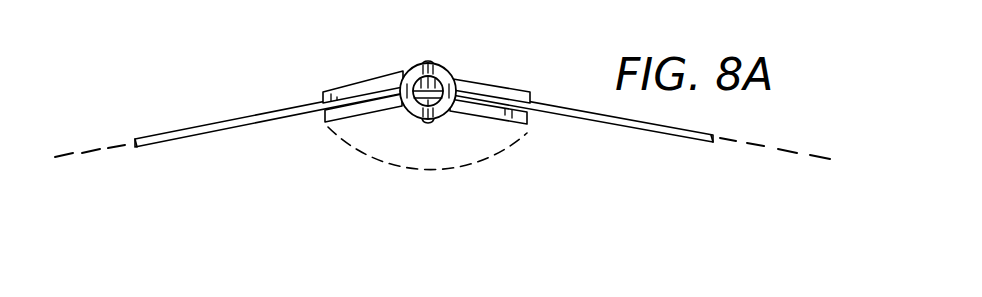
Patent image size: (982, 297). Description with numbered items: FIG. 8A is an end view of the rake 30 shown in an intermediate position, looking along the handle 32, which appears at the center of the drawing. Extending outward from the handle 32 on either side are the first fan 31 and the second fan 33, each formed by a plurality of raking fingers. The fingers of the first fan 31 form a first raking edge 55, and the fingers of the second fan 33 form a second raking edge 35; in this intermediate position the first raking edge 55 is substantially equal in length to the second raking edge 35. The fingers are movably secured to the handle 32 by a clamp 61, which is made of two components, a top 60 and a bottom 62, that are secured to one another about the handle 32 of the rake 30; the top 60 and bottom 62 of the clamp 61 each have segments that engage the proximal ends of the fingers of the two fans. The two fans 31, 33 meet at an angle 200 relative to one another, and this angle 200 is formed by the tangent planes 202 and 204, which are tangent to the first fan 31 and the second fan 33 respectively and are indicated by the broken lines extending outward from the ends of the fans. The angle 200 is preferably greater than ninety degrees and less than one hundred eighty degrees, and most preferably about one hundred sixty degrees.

The rake 30 is at (398, 65).
The first fan 31 is at (219, 110).
The handle 32 is at (438, 68).
The second fan 33 is at (693, 121).
The second raking edge 35 is at (678, 148).
The first raking edge 55 is at (165, 150).
The top of clamp 60 is at (520, 88).
The clamp 61 is at (325, 87).
The bottom of clamp 62 is at (516, 128).
The angle 200 is at (428, 167).
The tangent plane 202 is at (65, 165).
The tangent plane 204 is at (831, 162).